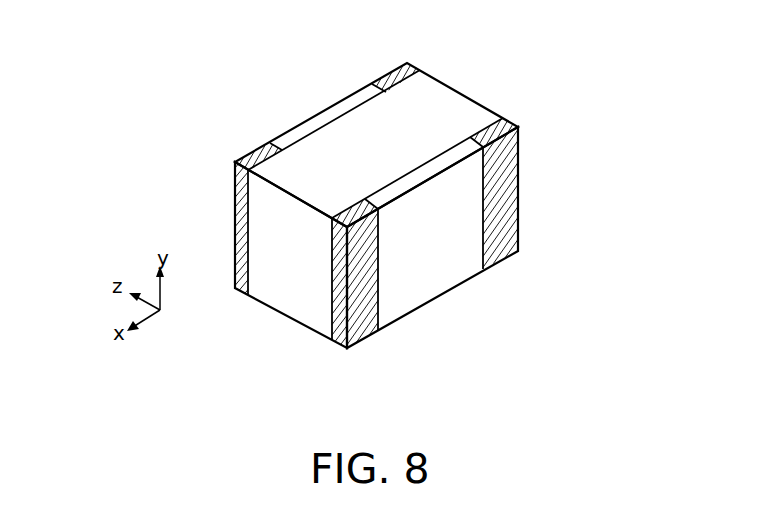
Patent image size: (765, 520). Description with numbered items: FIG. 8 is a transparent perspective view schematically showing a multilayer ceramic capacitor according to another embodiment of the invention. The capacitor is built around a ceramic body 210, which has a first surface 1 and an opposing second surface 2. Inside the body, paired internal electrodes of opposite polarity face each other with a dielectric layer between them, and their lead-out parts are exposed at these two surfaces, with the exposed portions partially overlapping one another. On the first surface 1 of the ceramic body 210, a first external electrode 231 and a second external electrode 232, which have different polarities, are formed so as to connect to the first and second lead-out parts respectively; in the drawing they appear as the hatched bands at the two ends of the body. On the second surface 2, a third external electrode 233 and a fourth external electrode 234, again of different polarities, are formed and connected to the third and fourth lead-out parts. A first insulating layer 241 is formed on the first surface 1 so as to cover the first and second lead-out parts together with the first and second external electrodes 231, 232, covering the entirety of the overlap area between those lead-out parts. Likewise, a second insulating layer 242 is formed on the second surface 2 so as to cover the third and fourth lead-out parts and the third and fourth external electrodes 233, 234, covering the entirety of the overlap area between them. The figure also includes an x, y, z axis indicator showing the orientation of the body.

The first surface 1 is at (538, 277).
The second surface 2 is at (256, 115).
The ceramic body 210 is at (452, 97).
The first external electrode 231 is at (358, 350).
The second external electrode 232 is at (518, 177).
The third external electrode 233 is at (247, 155).
The fourth external electrode 234 is at (393, 72).
The first insulating layer 241 is at (438, 287).
The second insulating layer 242 is at (323, 112).